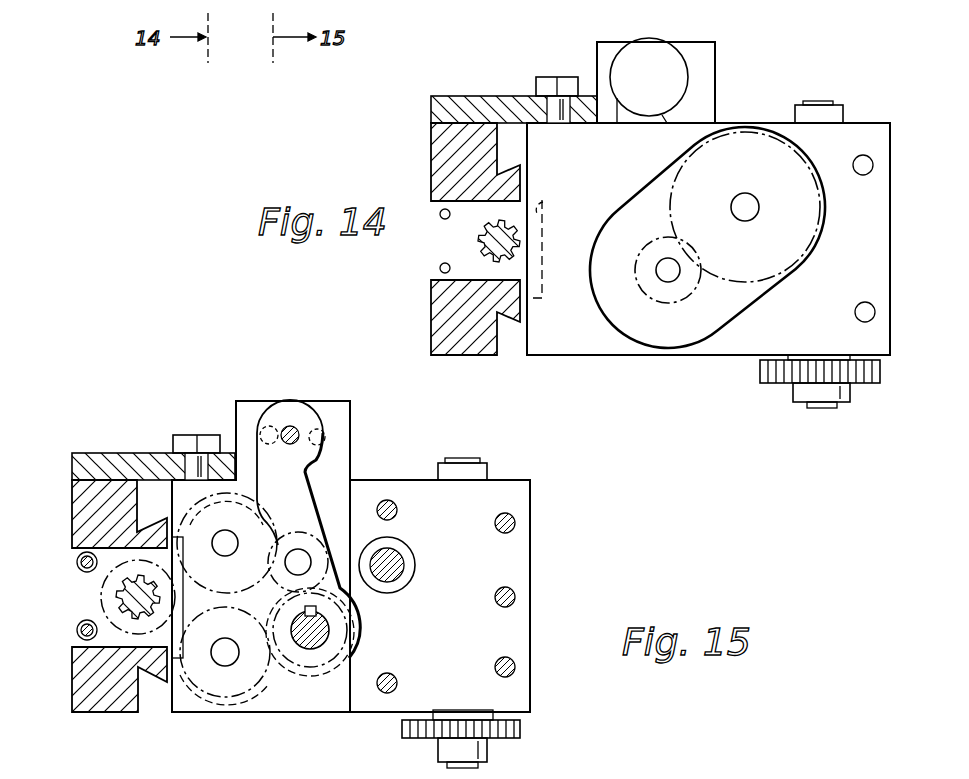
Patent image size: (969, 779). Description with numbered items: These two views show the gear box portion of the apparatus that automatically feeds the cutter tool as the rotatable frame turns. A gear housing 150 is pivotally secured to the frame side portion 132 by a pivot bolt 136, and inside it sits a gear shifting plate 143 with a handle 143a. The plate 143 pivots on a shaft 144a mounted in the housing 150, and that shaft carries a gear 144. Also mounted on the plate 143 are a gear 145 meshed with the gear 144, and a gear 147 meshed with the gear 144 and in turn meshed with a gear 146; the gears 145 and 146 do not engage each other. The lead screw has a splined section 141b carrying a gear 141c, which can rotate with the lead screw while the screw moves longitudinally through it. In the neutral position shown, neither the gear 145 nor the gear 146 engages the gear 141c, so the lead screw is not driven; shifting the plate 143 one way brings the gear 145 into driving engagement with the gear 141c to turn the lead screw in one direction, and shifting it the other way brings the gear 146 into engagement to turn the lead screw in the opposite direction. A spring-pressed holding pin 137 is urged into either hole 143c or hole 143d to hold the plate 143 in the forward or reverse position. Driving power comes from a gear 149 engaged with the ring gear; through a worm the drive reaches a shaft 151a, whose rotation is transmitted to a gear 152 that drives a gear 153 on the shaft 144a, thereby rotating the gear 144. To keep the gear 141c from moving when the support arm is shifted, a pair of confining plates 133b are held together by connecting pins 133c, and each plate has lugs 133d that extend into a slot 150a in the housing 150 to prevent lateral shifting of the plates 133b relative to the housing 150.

In FIG. 14, the frame side portion 132 is at (492, 98).
In FIG. 15, the frame side portion 132 is at (104, 455).
In FIG. 14, the pivot bolt 136 is at (548, 78).
In FIG. 15, the pivot bolt 136 is at (190, 433).
In FIG. 15, the confining plates 133b is at (75, 565).
In FIG. 14, the connecting pins 133c is at (440, 268).
In FIG. 15, the connecting pins 133c is at (78, 555).
In FIG. 14, the lugs 133d is at (527, 191).
In FIG. 15, the lugs 133d is at (188, 541).
In FIG. 15, the spring-pressed holding pin 137 is at (293, 426).
In FIG. 14, the splined section 141b is at (483, 248).
In FIG. 15, the splined section 141b is at (120, 590).
In FIG. 15, the gear 141c is at (101, 603).
In FIG. 14, the gear shifting plate 143 is at (627, 123).
In FIG. 15, the gear shifting plate 143 is at (310, 417).
In FIG. 15, the handle 143a is at (290, 435).
In FIG. 15, the hole 143c is at (269, 426).
In FIG. 15, the hole 143d is at (327, 440).
In FIG. 15, the gear 144 is at (310, 677).
In FIG. 14, the shaft 144a is at (668, 278).
In FIG. 15, the shaft 144a is at (327, 633).
In FIG. 15, the gear 145 is at (248, 700).
In FIG. 15, the gear 146 is at (268, 520).
In FIG. 15, the gear 147 is at (298, 537).
In FIG. 14, the gear 149 is at (776, 385).
In FIG. 15, the gear 149 is at (522, 729).
In FIG. 14, the gear housing 150 is at (670, 137).
In FIG. 15, the gear housing 150 is at (413, 480).
In FIG. 14, the slot 150a is at (548, 215).
In FIG. 14, the shaft 151a is at (746, 198).
In FIG. 15, the shaft 151a is at (398, 577).
In FIG. 14, the gear 152 is at (760, 280).
In FIG. 14, the gear 153 is at (697, 288).